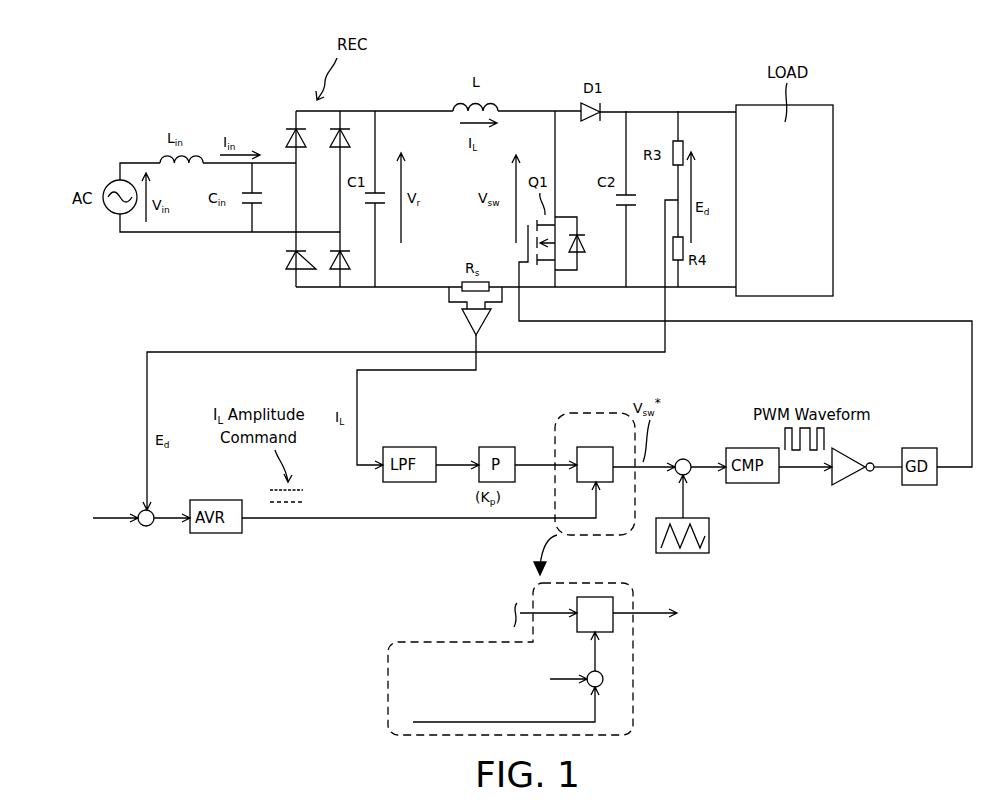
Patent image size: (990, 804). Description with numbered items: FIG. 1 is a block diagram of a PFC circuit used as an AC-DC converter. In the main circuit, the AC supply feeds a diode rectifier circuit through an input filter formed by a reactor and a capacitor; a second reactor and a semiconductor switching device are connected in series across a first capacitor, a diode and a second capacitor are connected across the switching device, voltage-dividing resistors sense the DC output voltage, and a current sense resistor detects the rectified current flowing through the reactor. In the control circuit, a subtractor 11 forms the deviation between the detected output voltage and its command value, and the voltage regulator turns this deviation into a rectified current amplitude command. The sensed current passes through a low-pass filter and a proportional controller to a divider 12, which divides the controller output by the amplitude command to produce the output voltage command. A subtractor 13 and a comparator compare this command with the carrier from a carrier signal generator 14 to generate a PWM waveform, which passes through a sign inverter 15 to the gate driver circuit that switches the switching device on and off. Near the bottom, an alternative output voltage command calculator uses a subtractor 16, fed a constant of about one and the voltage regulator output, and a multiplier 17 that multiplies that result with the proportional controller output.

The subtractor 11 is at (145, 528).
The divider 12 is at (598, 447).
The subtractor 13 is at (690, 457).
The carrier signal generator 14 is at (709, 535).
The sign inverter 15 is at (850, 480).
The subtractor 16 is at (603, 677).
The multiplier 17 is at (593, 595).